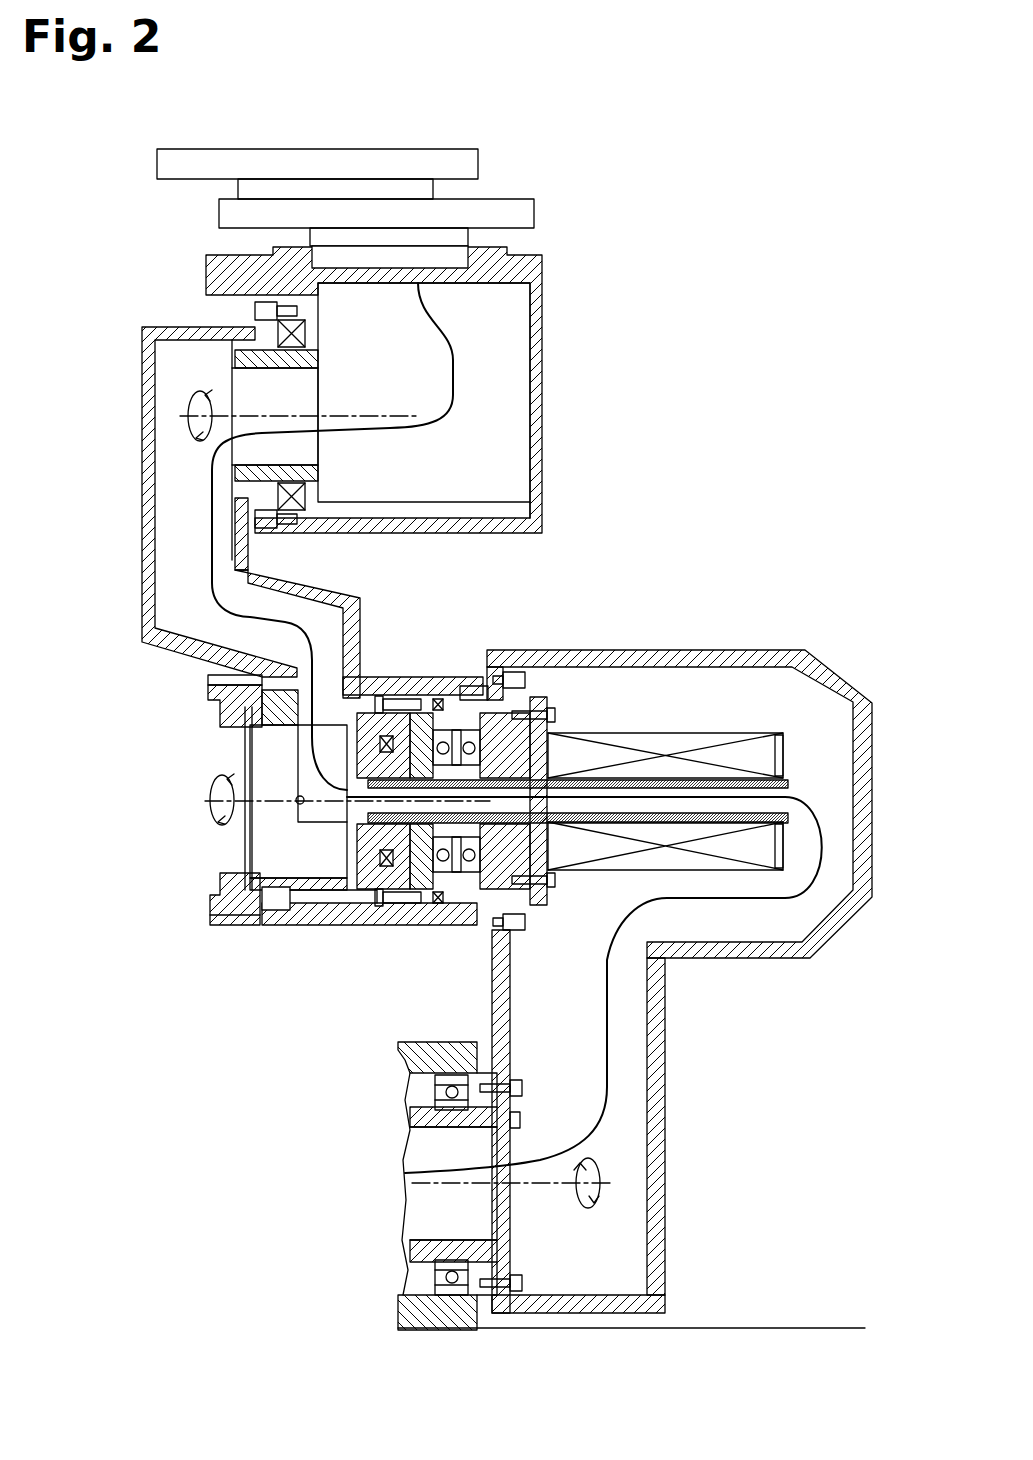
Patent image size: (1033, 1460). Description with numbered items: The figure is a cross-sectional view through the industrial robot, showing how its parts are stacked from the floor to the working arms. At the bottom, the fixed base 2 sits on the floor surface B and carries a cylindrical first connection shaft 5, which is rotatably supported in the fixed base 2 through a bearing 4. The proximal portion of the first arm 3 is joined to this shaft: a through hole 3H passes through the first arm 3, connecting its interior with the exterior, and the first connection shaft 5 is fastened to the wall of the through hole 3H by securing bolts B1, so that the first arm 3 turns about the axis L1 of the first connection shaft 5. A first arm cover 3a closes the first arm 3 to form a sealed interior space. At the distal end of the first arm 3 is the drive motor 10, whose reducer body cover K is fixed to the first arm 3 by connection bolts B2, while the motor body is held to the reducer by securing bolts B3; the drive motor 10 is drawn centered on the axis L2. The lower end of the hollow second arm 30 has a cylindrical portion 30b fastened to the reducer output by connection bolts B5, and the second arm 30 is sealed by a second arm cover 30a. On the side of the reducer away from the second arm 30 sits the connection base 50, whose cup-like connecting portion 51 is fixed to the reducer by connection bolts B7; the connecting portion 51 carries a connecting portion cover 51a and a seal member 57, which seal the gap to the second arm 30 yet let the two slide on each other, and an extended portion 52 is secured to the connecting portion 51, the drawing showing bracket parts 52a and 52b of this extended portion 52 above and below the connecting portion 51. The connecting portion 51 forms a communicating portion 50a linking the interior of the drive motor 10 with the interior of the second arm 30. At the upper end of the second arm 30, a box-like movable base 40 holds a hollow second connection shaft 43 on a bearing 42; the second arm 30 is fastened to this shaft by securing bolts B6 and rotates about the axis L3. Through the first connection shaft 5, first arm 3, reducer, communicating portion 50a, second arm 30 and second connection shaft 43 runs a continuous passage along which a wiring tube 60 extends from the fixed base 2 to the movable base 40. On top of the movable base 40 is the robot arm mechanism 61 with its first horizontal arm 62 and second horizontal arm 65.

The fixed base 2 is at (405, 1043).
The first arm 3 is at (665, 1108).
The first arm cover 3a is at (665, 1175).
The through hole 3H is at (520, 1121).
The bearing 4 is at (432, 1092).
The first connection shaft 5 is at (422, 1128).
The drive motor 10 is at (708, 729).
The second arm 30 is at (302, 592).
The second arm cover 30a is at (142, 457).
The cylindrical portion 30b is at (422, 672).
The movable base 40 is at (543, 333).
The bearing 42 is at (305, 335).
The second connection shaft 43 is at (290, 370).
The connection base 50 is at (237, 790).
The communicating portion 50a is at (297, 804).
The connecting portion 51 is at (347, 862).
The connecting portion cover 51a is at (245, 748).
The extended portion 52 is at (305, 828).
The bracket portion 52a is at (210, 903).
The bracket portion 52b is at (208, 718).
The seal member 57 is at (278, 906).
The wiring tube 60 is at (453, 352).
The robot arm mechanism 61 is at (508, 183).
The first horizontal arm 62 is at (536, 214).
The second horizontal arm 65 is at (440, 148).
The floor surface B is at (812, 1326).
The securing bolts B1 is at (522, 1088).
The connection bolts B2 is at (526, 682).
The securing bolts B3 is at (556, 716).
The connection bolts B5 is at (394, 699).
The securing bolts B6 is at (235, 357).
The connection bolts B7 is at (360, 752).
The body cover K is at (478, 688).
The axis L1 is at (533, 1190).
The second axis L2 is at (258, 800).
The axis L3 is at (374, 412).